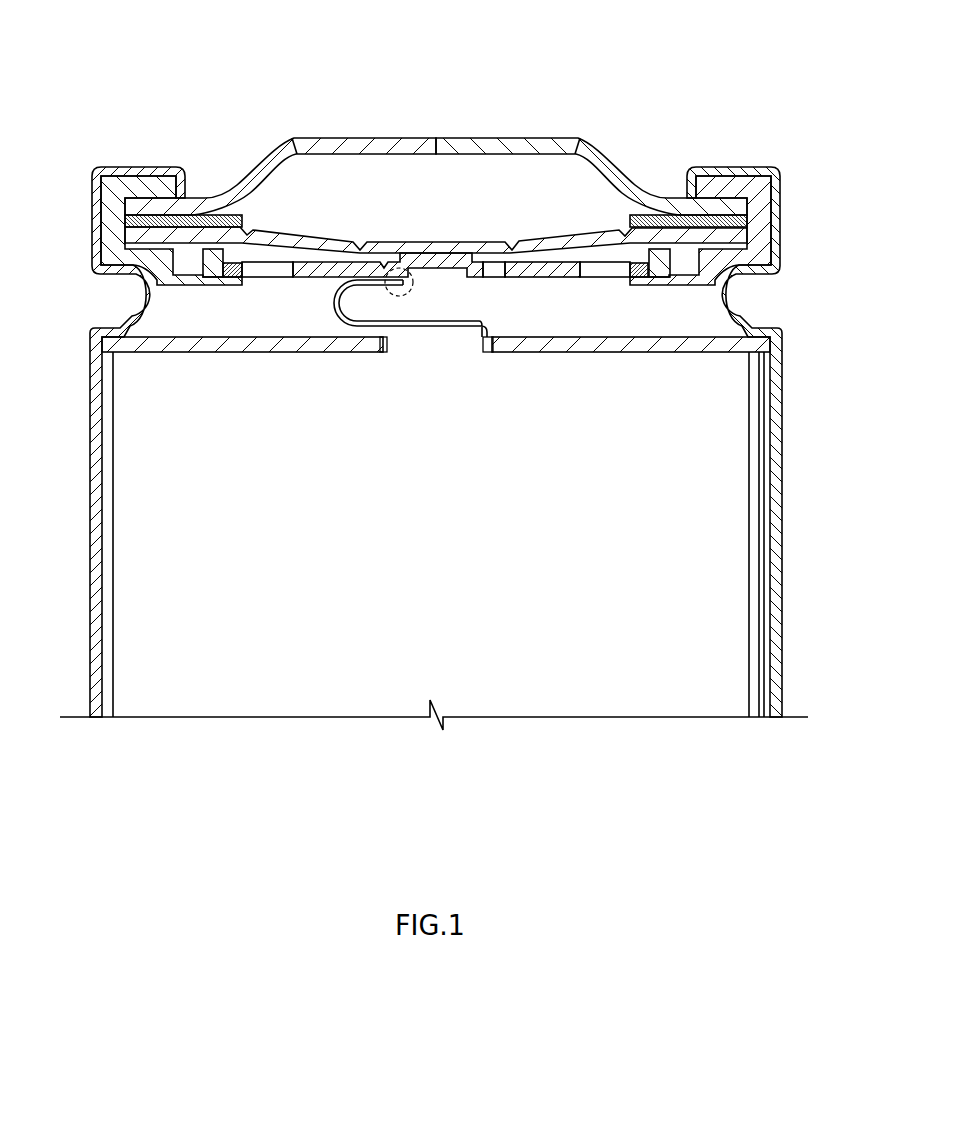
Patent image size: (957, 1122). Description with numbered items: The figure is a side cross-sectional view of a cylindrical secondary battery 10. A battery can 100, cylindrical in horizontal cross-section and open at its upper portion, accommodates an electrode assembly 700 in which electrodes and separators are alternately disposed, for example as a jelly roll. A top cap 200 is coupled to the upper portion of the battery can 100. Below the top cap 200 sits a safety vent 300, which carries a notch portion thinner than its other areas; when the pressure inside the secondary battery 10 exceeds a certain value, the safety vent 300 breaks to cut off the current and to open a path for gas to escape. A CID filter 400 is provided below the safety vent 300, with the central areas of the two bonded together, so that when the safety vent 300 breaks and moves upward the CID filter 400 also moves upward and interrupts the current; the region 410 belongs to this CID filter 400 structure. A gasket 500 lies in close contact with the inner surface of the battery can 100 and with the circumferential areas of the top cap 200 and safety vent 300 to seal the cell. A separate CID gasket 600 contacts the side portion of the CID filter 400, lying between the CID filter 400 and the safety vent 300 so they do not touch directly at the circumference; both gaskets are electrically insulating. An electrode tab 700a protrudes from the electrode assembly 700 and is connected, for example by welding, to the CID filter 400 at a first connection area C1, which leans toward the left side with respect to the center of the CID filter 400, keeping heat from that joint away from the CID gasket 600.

The secondary battery 10 is at (508, 77).
The battery can 100 is at (777, 537).
The top cap 200 is at (440, 150).
The safety vent 300 is at (553, 240).
The CID filter 400 is at (570, 265).
The thin portion of current interrupt plate 410 is at (258, 270).
The gasket 500 is at (762, 206).
The CID gasket 600 is at (660, 261).
The electrode assembly 700 is at (737, 630).
The electrode tab 700a is at (340, 303).
The first connection area C1 is at (401, 297).